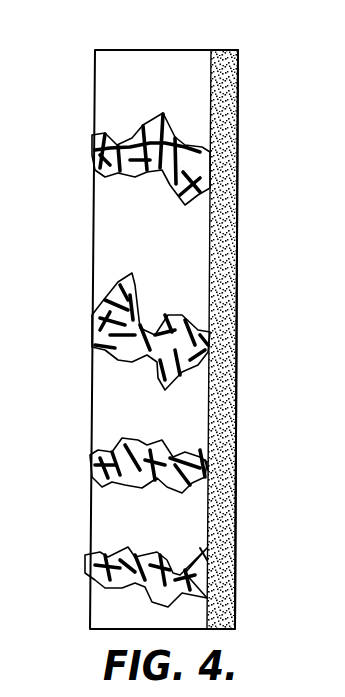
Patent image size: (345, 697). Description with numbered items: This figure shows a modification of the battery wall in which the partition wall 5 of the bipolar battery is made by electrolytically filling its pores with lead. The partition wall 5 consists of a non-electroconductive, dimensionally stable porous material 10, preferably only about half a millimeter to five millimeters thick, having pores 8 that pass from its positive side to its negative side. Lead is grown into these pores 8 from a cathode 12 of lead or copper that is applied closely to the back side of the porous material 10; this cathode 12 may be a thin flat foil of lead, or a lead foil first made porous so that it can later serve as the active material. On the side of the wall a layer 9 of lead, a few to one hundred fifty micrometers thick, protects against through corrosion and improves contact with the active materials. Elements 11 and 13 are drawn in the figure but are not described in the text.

The partition wall 5 is at (148, 50).
The pores 8 is at (95, 330).
The layer of lead 9 is at (232, 69).
The porous material 10 is at (128, 82).
The abrasive particle 11 is at (98, 165).
The cathode 12 is at (233, 323).
The bonding contact 13 is at (205, 460).